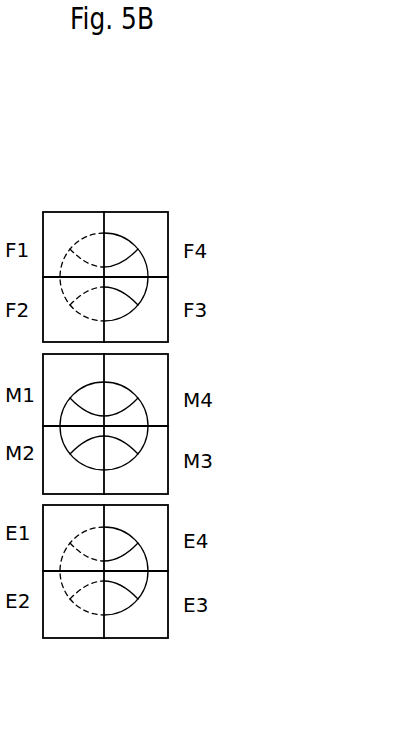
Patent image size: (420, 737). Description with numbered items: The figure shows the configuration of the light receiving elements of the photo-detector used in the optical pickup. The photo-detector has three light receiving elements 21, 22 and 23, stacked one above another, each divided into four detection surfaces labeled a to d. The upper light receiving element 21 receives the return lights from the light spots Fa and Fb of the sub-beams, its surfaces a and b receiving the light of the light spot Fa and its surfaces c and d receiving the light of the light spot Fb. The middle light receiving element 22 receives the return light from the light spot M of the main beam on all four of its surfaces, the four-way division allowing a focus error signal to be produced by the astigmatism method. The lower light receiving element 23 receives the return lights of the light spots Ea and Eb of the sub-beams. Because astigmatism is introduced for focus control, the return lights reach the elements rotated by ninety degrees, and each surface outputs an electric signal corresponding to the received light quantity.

The light receiving element 21 is at (145, 247).
The light receiving element 22 is at (145, 430).
The light receiving element 23 is at (147, 604).
The light spot Fa is at (92, 247).
The light spot Fb is at (118, 247).
The light spot M is at (125, 453).
The light spot Ea is at (120, 602).
The light spot Eb is at (92, 605).